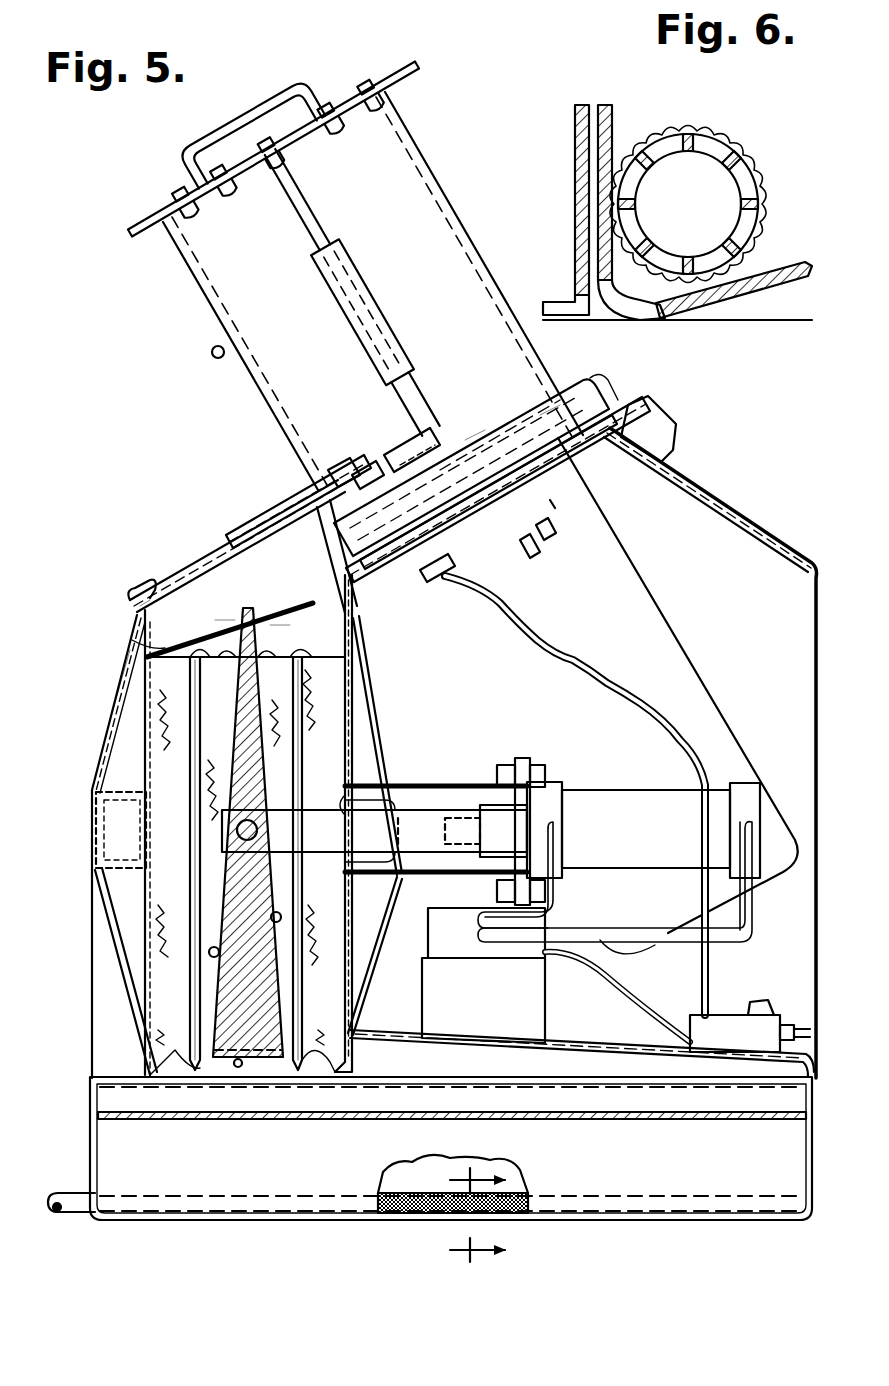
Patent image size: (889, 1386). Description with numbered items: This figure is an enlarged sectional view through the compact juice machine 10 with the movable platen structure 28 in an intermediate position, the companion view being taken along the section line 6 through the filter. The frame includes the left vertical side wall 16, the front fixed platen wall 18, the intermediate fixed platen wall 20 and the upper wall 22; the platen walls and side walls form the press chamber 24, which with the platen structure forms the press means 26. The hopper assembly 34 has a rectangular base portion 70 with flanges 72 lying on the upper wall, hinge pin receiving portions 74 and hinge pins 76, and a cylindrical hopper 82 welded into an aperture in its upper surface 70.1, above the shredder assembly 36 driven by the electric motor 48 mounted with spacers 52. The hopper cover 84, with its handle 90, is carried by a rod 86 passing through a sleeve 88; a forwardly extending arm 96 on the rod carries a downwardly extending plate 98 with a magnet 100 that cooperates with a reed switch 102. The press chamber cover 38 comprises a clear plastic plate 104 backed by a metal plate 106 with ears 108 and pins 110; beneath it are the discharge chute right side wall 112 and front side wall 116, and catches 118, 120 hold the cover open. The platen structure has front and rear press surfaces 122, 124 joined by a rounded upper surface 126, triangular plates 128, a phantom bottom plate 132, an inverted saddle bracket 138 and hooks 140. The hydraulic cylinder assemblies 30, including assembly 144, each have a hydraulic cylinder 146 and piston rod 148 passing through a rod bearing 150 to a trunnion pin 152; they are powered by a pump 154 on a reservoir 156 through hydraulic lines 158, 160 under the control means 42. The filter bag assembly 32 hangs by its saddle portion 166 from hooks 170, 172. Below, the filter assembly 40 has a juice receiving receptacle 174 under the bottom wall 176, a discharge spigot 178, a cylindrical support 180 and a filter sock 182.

In FIG. 5, the compact juice machine 10 is at (172, 450).
In FIG. 5, the left vertical side wall 16 is at (761, 815).
In FIG. 6, the left vertical side wall 16 is at (574, 125).
In FIG. 5, the front fixed platen wall 18 is at (138, 705).
In FIG. 5, the intermediate fixed platen wall 20 is at (352, 700).
In FIG. 5, the upper wall 22 is at (650, 458).
In FIG. 5, the press chamber 24 is at (212, 590).
In FIG. 5, the press means 26 is at (85, 908).
In FIG. 5, the movable platen structure 28 is at (250, 1065).
In FIG. 5, the hydraulic cylinder assemblies 30 is at (752, 740).
In FIG. 5, the filter bag assembly 32 is at (280, 630).
In FIG. 5, the hopper assembly 34 is at (185, 300).
In FIG. 5, the shredder assembly 36 is at (472, 432).
In FIG. 5, the press chamber cover 38 is at (180, 560).
In FIG. 5, the filter assembly 40 is at (82, 1165).
In FIG. 5, the control means 42 is at (785, 1008).
In FIG. 5, the electric motor 48 is at (665, 636).
In FIG. 5, the spacers 52 is at (380, 600).
In FIG. 5, the hopper base portion 70 is at (572, 392).
In FIG. 5, the upper surface of hopper base portion 70.1 is at (548, 418).
In FIG. 5, the flanges 72 is at (545, 470).
In FIG. 5, the hinge pin receiving portions 74 is at (608, 381).
In FIG. 5, the hinge pins 76 is at (588, 445).
In FIG. 5, the cylindrical hopper 82 is at (478, 198).
In FIG. 5, the hopper cover 84 is at (140, 225).
In FIG. 5, the rod 86 is at (308, 226).
In FIG. 5, the sleeve 88 is at (350, 290).
In FIG. 5, the handle 90 is at (268, 108).
In FIG. 5, the forwardly extending arm 96 is at (288, 510).
In FIG. 5, the downwardly extending plate 98 is at (362, 468).
In FIG. 5, the magnet 100 is at (392, 475).
In FIG. 5, the reed switch 102 is at (445, 585).
In FIG. 5, the clear plastic plate 104 is at (236, 580).
In FIG. 5, the metal plate 106 is at (232, 550).
In FIG. 5, the ears 108 is at (312, 548).
In FIG. 5, the pins 110 is at (345, 495).
In FIG. 5, the right side wall of discharge chute 112 is at (165, 578).
In FIG. 5, the front side wall of discharge chute 116 is at (140, 658).
In FIG. 5, the catch 118 is at (125, 595).
In FIG. 5, the catch 120 is at (212, 352).
In FIG. 5, the front platen press surface 122 is at (272, 917).
In FIG. 5, the rear platen press surface 124 is at (218, 956).
In FIG. 5, the rounded upper surface 126 is at (272, 863).
In FIG. 5, the triangular plates 128 is at (245, 738).
In FIG. 5, the bottom plate 132 is at (238, 1058).
In FIG. 5, the inverted saddle bracket 138 is at (225, 862).
In FIG. 5, the hooks or eyes 140 is at (245, 632).
In FIG. 5, the hydraulic cylinder assembly 144 is at (612, 785).
In FIG. 5, the hydraulic cylinder 146 is at (661, 830).
In FIG. 5, the piston rod 148 is at (432, 805).
In FIG. 5, the rod bearing or seal 150 is at (338, 790).
In FIG. 5, the trunnion pin 152 is at (225, 825).
In FIG. 5, the pump 154 is at (450, 890).
In FIG. 5, the hydraulic reservoir 156 is at (483, 1000).
In FIG. 5, the hydraulic line 158 is at (565, 893).
In FIG. 5, the hydraulic line 160 is at (655, 938).
In FIG. 5, the intermediate saddle portion 166 is at (216, 863).
In FIG. 5, the hooks 170 is at (130, 645).
In FIG. 5, the hooks 172 is at (335, 640).
In FIG. 5, the juice receiving receptacle 174 is at (98, 1135).
In FIG. 6, the juice receiving receptacle 174 is at (632, 322).
In FIG. 5, the bottom wall 176 is at (432, 1050).
In FIG. 5, the discharge spigot 178 is at (62, 1222).
In FIG. 5, the cylindrical support 180 is at (188, 1195).
In FIG. 6, the cylindrical support 180 is at (736, 180).
In FIG. 5, the filter sock 182 is at (530, 1176).
In FIG. 6, the filter sock 182 is at (735, 140).
In FIG. 5, the section line 6— 6 is at (463, 1212).